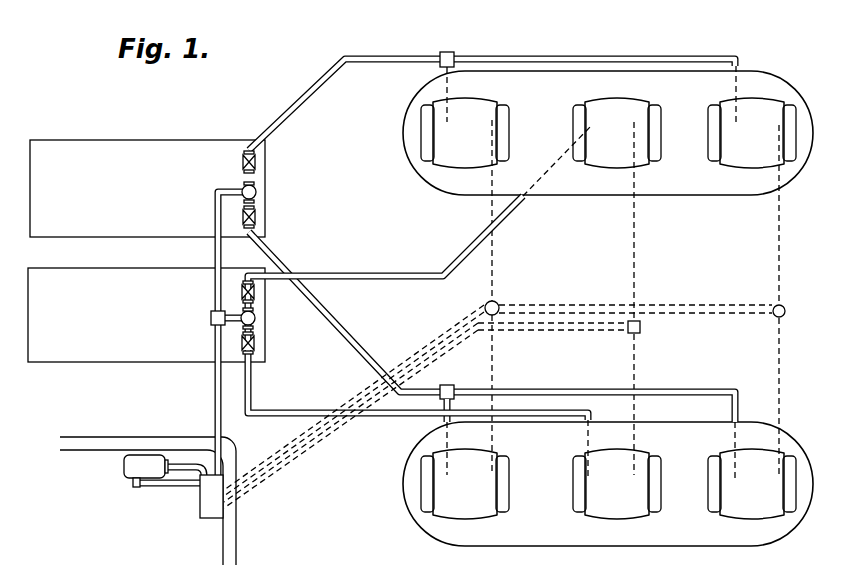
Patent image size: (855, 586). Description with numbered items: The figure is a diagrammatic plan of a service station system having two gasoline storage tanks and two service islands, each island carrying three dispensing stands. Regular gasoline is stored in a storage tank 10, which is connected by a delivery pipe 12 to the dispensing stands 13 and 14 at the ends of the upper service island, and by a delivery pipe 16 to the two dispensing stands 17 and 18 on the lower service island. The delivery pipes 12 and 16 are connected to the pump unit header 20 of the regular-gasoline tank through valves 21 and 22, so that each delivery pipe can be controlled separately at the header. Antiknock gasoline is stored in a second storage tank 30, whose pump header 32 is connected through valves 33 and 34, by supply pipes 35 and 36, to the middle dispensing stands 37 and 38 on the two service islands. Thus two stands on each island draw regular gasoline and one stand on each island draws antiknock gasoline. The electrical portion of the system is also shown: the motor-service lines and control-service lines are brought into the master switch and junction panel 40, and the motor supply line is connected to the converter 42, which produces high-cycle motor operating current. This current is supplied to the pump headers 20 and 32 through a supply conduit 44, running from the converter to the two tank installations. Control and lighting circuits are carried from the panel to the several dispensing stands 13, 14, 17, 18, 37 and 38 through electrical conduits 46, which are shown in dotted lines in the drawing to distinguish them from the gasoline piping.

The storage tank 10 is at (147, 188).
The delivery pipe 12 is at (316, 86).
The dispensing stand 13 is at (465, 184).
The dispensing stand 14 is at (752, 185).
The delivery pipe 16 is at (373, 357).
The dispensing stand 17 is at (465, 417).
The dispensing stand 18 is at (752, 418).
The pump unit header 20 is at (257, 192).
The valve 21 is at (257, 162).
The valve 22 is at (257, 218).
The storage tank 30 is at (146, 315).
The pump header 32 is at (256, 318).
The valve 33 is at (256, 292).
The valve 34 is at (256, 343).
The supply pipe 35 is at (378, 273).
The supply pipe 36 is at (300, 410).
The dispensing stand 37 is at (592, 209).
The dispensing stand 38 is at (617, 426).
The master switch and junction panel 40 is at (205, 517).
The converter 42 is at (124, 470).
The supply conduit 44 is at (214, 398).
The electrical conduits 46 is at (305, 452).